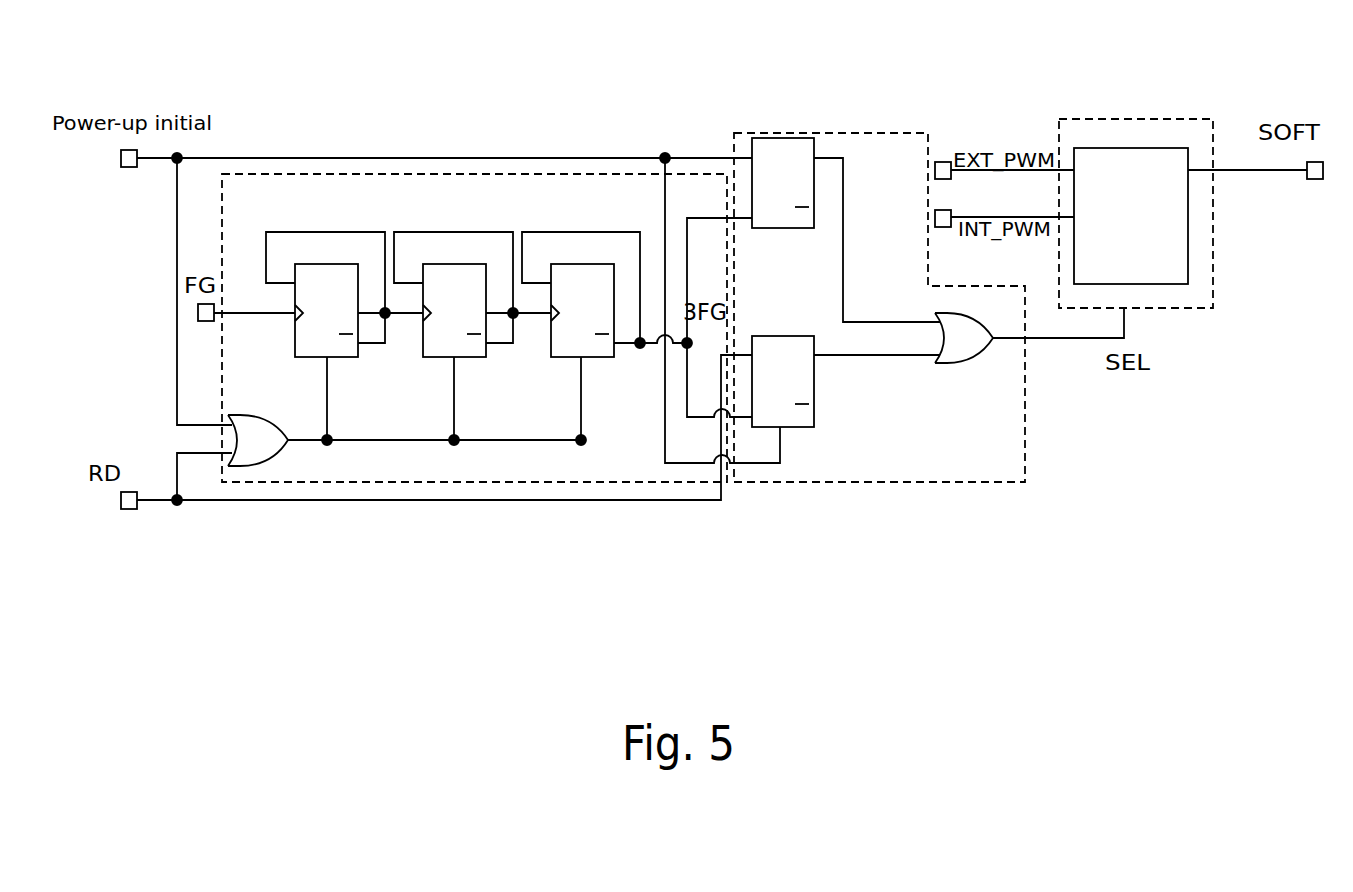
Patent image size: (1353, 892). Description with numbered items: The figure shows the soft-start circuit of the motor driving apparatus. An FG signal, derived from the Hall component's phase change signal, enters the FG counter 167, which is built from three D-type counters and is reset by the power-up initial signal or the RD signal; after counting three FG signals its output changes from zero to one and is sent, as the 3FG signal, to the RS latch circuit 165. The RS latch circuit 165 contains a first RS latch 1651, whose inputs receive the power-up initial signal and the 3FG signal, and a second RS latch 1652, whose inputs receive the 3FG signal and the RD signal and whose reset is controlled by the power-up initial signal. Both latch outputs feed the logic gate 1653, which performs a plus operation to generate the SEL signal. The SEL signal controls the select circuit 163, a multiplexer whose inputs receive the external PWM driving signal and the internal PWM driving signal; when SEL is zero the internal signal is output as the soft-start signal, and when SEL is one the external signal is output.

The FG counter 167 is at (390, 158).
The RS latch circuit 165 is at (808, 133).
The first RS latch 1651 is at (757, 185).
The second RS latch 1652 is at (770, 427).
The logic gate 1653 is at (953, 347).
The select circuit 163 is at (1113, 119).